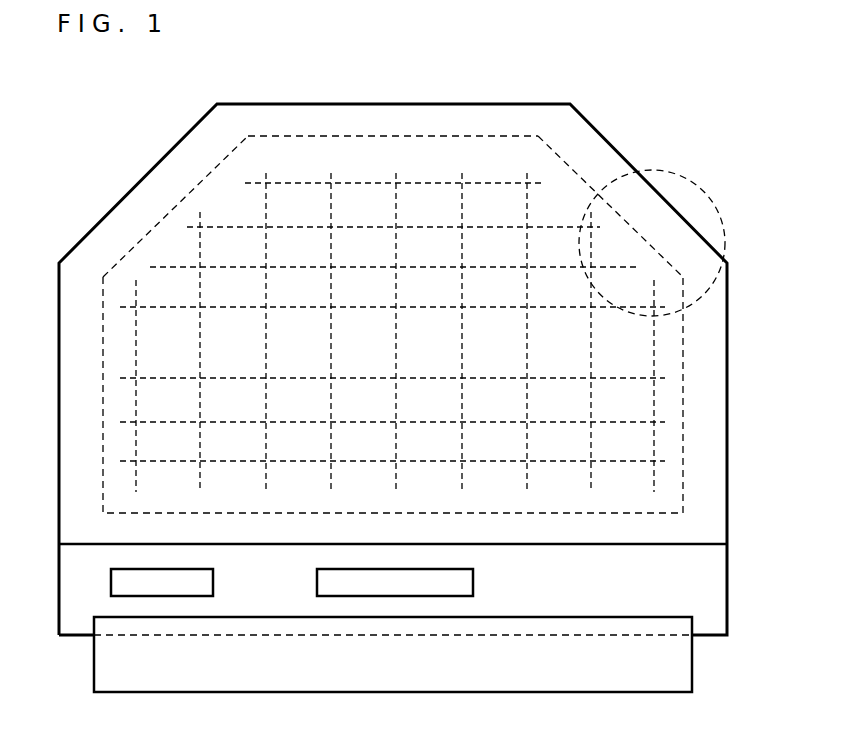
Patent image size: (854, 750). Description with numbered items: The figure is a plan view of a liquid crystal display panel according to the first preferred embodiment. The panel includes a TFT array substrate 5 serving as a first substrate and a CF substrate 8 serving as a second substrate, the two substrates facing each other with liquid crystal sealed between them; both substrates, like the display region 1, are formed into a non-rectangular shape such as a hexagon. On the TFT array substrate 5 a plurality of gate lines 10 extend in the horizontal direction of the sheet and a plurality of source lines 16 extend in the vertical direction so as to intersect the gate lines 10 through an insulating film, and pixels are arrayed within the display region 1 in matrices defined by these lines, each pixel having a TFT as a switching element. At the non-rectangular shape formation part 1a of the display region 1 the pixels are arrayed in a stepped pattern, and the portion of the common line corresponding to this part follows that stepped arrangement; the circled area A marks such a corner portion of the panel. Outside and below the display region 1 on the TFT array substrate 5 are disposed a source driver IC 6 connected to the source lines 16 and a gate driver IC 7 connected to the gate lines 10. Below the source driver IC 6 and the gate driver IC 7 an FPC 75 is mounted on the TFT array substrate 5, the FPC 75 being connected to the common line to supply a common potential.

The display region 1 is at (103, 328).
The non-rectangular shape formation part 1a is at (207, 177).
The gate line 10 is at (376, 300).
The source line 16 is at (198, 448).
The enlarged region A is at (668, 172).
The CF substrate 8 is at (727, 460).
The TFT array substrate 5 is at (727, 585).
The gate driver IC 7 is at (213, 582).
The source driver IC 6 is at (473, 582).
The FPC 75 is at (528, 675).